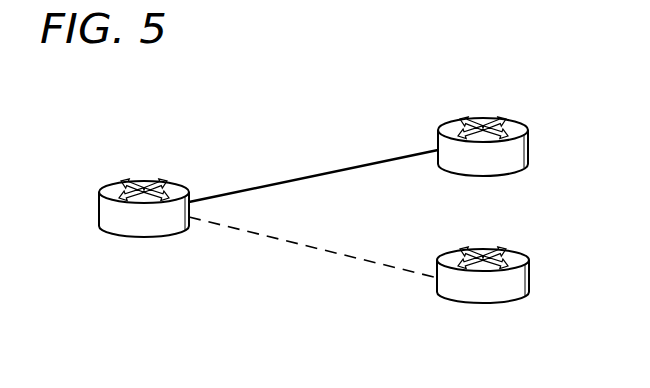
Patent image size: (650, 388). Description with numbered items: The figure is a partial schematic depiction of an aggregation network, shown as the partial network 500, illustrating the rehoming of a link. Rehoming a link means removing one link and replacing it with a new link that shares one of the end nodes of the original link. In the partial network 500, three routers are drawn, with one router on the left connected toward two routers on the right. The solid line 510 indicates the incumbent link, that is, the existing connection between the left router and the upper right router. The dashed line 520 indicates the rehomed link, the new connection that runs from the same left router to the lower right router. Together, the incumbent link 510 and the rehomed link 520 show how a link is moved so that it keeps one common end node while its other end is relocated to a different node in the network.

The partial network 500 is at (266, 132).
The incumbent link 510 is at (331, 172).
The rehomed link 520 is at (355, 257).